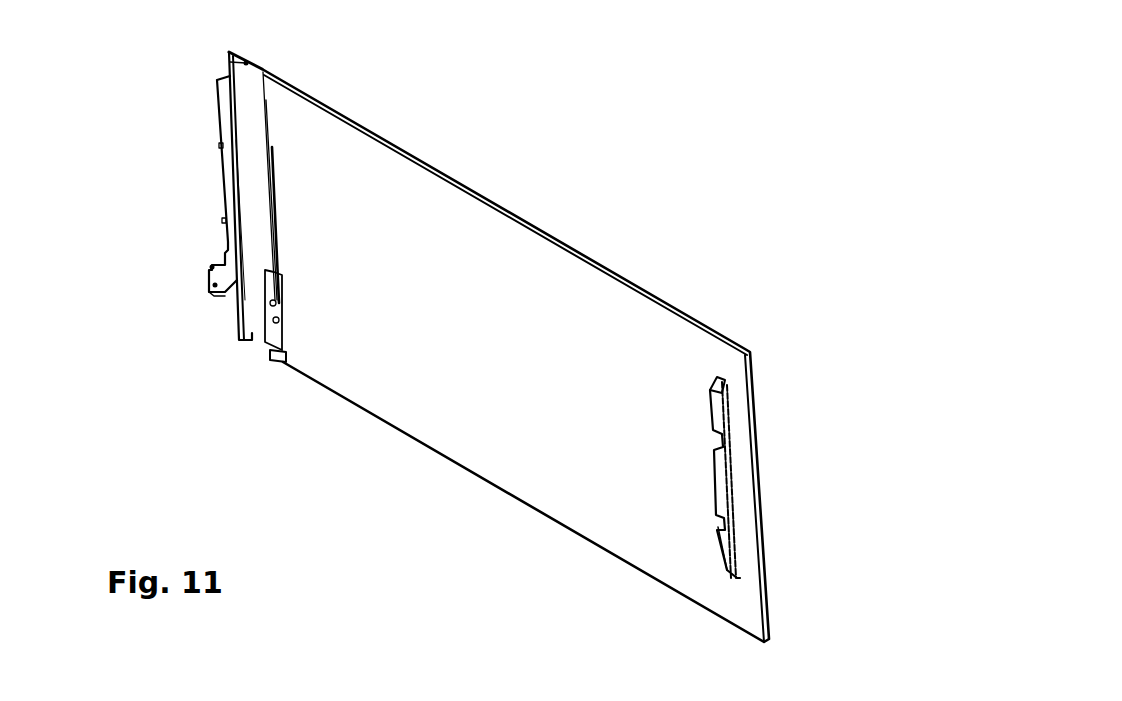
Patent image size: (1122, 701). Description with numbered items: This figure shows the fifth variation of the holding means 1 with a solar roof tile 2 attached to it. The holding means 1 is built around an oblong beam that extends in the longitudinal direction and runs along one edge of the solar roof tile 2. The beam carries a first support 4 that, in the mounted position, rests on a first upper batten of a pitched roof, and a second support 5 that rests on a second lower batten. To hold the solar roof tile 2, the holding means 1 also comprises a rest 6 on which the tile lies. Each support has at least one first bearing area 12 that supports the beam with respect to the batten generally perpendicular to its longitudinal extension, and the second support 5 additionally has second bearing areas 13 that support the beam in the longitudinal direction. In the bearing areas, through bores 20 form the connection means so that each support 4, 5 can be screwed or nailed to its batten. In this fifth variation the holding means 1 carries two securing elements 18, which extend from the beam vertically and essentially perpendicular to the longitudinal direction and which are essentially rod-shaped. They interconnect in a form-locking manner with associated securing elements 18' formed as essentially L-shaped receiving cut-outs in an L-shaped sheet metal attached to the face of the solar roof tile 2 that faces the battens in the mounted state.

The holding means 1 is at (247, 105).
The solar roof tile 2 is at (410, 358).
The first support 4 is at (263, 66).
The second support 5 is at (241, 322).
The rest 6 is at (247, 165).
The first bearing area 12 is at (230, 62).
The second bearing area 13 is at (215, 78).
The securing element 18 is at (134, 199).
The associated securing element 18' is at (829, 477).
The bore 20 is at (257, 313).